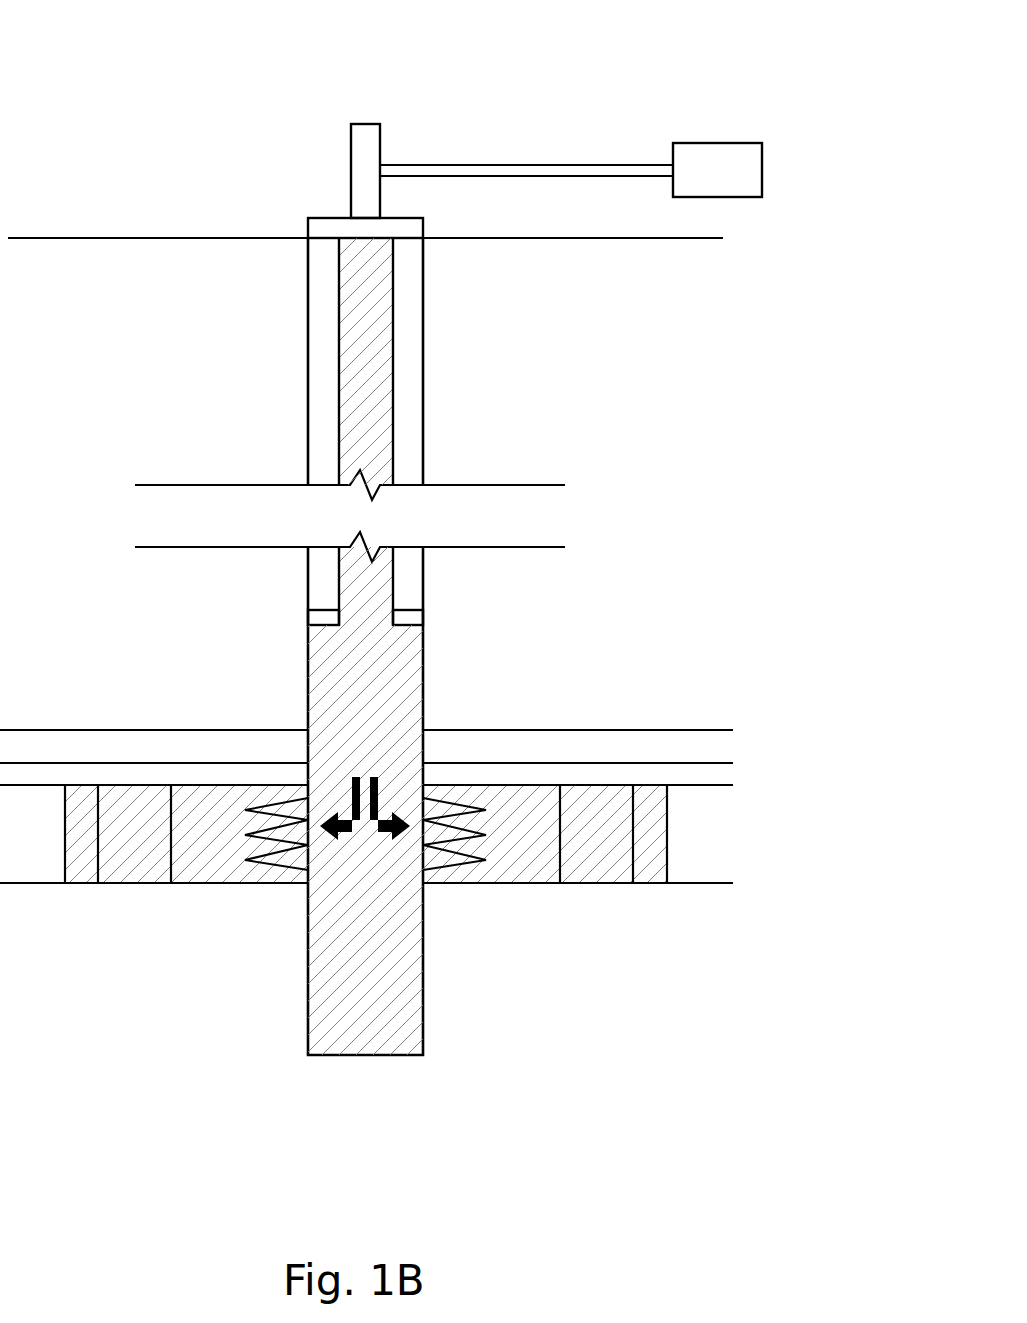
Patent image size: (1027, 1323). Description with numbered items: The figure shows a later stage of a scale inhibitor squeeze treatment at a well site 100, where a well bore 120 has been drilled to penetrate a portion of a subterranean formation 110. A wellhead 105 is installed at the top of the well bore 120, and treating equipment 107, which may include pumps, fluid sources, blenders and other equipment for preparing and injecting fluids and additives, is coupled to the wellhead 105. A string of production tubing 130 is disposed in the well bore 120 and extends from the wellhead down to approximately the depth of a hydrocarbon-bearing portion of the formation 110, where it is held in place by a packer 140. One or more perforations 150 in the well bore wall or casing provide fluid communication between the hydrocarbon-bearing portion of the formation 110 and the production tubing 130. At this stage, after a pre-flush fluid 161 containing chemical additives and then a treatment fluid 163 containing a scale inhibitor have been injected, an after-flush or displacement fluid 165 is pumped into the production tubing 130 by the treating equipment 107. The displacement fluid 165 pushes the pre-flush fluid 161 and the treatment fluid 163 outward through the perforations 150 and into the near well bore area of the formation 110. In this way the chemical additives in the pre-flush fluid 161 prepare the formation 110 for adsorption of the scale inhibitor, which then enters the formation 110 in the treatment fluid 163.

The well site 100 is at (132, 46).
The wellhead 105 is at (380, 133).
The treating equipment 107 is at (738, 188).
The subterranean formation 110 is at (186, 350).
The well bore 120 is at (423, 420).
The production tubing 130 is at (338, 432).
The packer 140 is at (325, 610).
The perforations 150 is at (278, 865).
The pre-flush fluid 161 is at (655, 862).
The treatment fluid 163 is at (598, 862).
The after-flush/displacement fluid 165 is at (378, 700).